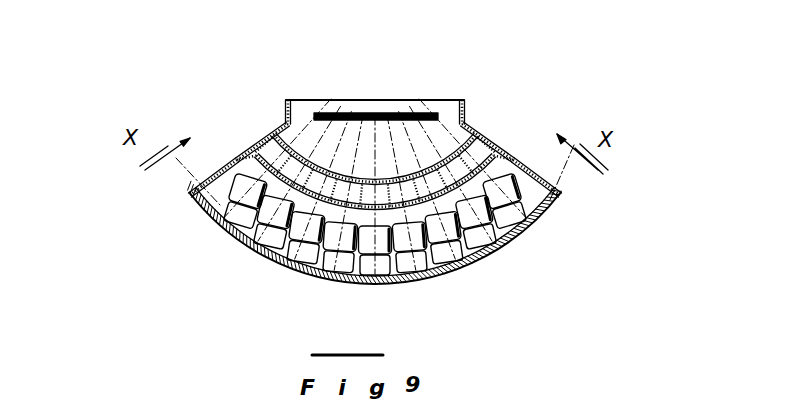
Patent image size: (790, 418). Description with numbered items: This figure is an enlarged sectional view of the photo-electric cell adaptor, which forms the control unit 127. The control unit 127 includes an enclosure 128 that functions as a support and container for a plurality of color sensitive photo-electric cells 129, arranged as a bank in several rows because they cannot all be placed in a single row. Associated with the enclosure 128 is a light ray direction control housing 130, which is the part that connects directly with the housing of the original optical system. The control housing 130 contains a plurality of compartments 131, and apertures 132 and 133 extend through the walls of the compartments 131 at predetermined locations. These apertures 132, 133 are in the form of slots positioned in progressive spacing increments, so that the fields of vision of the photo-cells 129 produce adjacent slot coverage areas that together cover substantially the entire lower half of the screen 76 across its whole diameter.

The screen 76 is at (345, 113).
The control unit 127 is at (275, 264).
The enclosure 128 is at (558, 206).
The color sensitive photo-electric cells 129 is at (470, 222).
The light ray direction control housing 130 is at (462, 124).
The compartments 131 is at (482, 152).
The apertures 132 is at (257, 162).
The apertures 133 is at (277, 136).